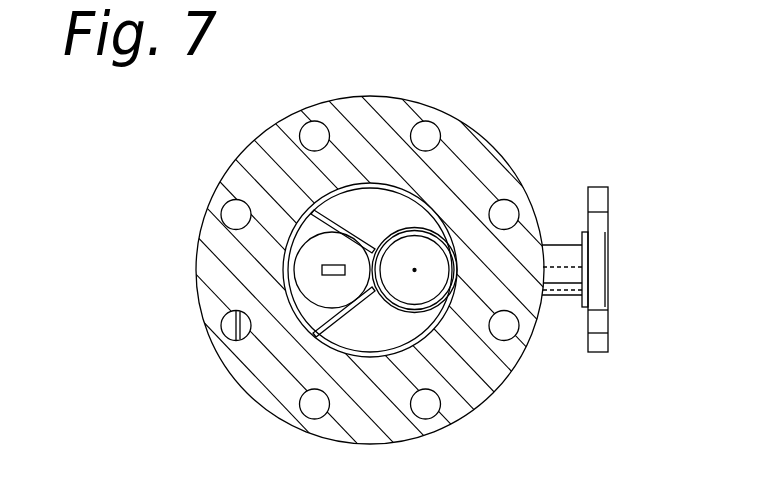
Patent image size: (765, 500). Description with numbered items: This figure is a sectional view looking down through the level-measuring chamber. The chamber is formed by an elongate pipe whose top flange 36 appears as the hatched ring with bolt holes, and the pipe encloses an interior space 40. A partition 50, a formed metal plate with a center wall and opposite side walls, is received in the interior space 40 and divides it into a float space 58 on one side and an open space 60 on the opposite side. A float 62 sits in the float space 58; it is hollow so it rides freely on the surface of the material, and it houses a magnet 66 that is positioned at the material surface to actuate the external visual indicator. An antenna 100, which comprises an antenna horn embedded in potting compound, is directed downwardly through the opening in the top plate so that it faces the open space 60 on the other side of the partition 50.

The top flange 36 is at (382, 269).
The interior space 40 is at (413, 220).
The partition 50 is at (375, 175).
The float space 58 is at (301, 154).
The open space 60 is at (412, 327).
The float 62 is at (279, 369).
The magnet 66 is at (323, 268).
The antenna 100 is at (500, 226).